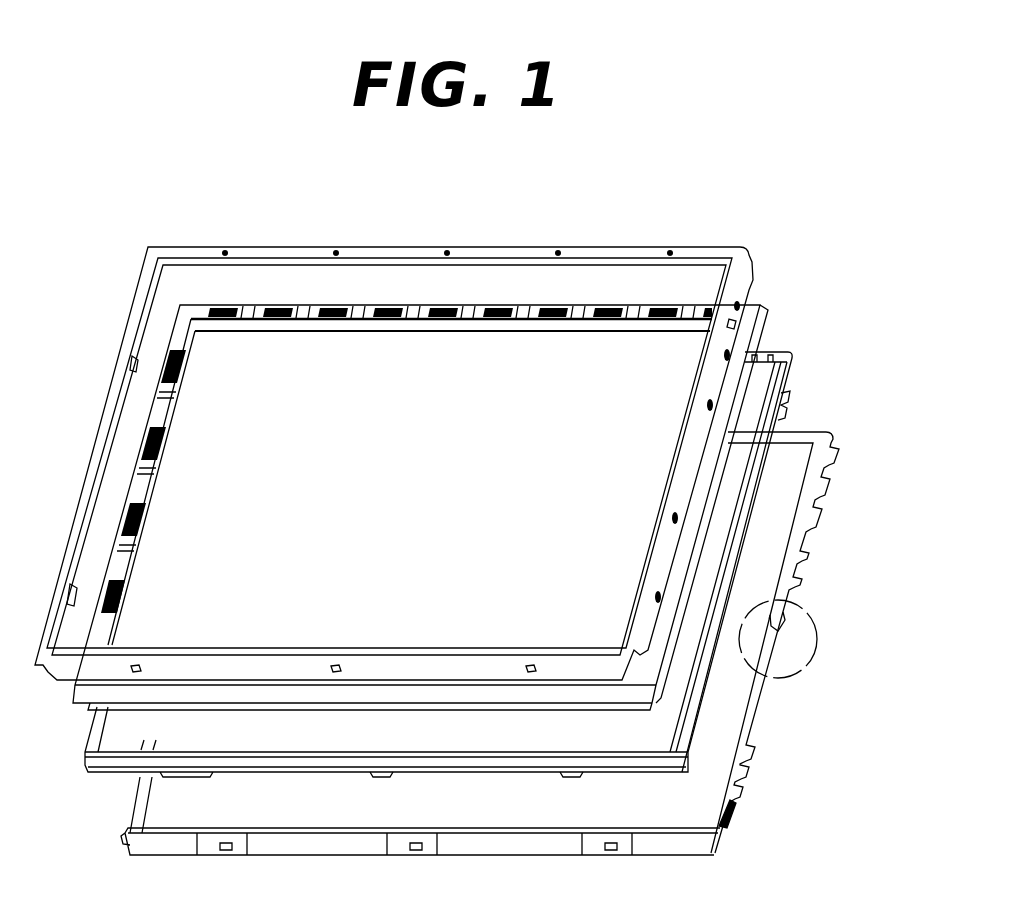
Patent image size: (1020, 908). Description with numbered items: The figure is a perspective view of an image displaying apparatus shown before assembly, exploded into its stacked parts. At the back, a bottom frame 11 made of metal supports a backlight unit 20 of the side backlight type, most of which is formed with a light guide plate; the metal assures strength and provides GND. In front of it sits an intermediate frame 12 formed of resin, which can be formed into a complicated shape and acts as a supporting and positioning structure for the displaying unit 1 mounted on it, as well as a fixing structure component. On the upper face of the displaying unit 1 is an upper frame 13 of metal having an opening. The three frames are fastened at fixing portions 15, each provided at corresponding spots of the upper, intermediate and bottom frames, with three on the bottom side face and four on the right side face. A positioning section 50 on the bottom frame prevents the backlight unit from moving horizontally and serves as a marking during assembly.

The displaying unit 1 is at (303, 348).
The bottom frame 11 is at (800, 553).
The intermediate frame 12 is at (770, 351).
The upper frame 13 is at (608, 250).
The fixing portion 15 is at (732, 323).
The backlight unit 20 is at (725, 703).
The positioning section 50 is at (812, 648).